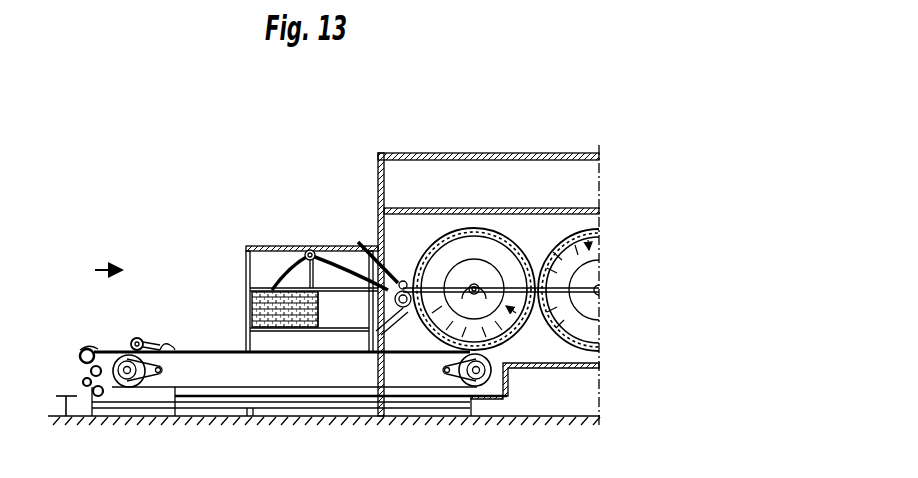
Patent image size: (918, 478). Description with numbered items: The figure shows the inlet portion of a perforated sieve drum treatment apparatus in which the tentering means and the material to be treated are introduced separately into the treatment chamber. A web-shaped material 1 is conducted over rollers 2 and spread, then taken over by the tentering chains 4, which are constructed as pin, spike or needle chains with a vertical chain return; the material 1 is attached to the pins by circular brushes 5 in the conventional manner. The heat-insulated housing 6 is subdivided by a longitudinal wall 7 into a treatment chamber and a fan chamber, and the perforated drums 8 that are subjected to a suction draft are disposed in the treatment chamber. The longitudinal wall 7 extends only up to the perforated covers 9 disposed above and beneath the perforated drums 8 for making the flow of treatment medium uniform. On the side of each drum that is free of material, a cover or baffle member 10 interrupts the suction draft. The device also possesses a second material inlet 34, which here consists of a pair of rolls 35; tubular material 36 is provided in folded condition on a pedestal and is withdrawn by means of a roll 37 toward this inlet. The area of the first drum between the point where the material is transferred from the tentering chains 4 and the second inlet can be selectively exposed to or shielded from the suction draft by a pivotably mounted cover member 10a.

The web-shaped material 1 is at (66, 417).
The rollers 2 is at (83, 387).
The tentering chains 4 is at (177, 387).
The circular brushes 5 is at (137, 338).
The heat-insulated housing 6 is at (441, 208).
The longitudinal wall 7 is at (402, 225).
The perforated drums 8 is at (531, 238).
The perforated covers 9 is at (496, 230).
The cover or baffle member 10 is at (606, 334).
The pivotably mounted cover member 10a is at (477, 302).
The second material inlet 34 is at (385, 312).
The pair of rolls 35 is at (361, 246).
The tubular material 36 is at (271, 288).
The roll 37 is at (310, 250).